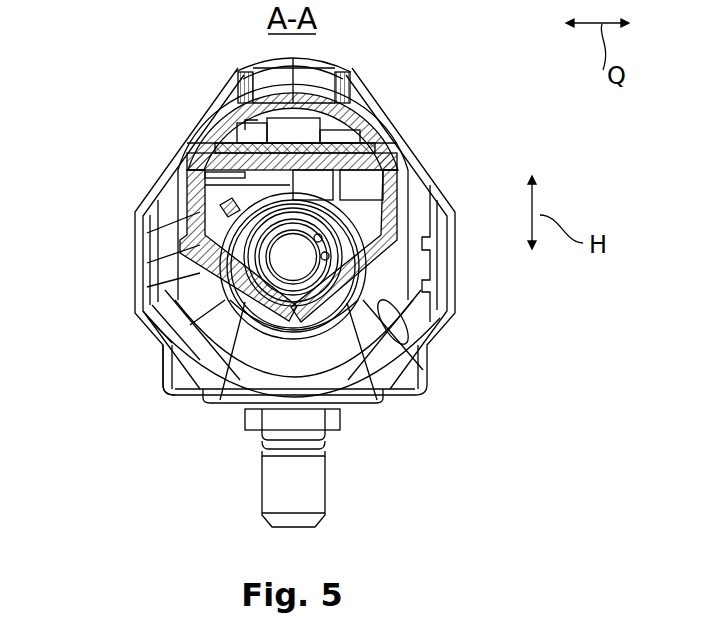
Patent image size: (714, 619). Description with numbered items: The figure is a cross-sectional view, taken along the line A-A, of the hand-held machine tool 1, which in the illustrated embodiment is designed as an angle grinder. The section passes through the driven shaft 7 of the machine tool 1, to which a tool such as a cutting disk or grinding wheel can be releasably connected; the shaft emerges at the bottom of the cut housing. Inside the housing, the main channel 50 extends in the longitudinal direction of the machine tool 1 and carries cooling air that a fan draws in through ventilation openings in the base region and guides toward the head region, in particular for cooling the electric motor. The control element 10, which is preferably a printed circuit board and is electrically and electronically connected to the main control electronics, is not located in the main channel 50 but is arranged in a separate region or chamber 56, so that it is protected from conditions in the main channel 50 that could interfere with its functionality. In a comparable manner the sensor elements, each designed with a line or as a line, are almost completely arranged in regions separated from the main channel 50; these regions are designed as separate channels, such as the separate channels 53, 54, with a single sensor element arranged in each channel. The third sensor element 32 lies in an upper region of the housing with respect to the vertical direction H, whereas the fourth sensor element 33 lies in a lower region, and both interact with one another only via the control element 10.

The hand-held machine tool 1 is at (420, 106).
The driven shaft 7 is at (312, 482).
The control element 10 is at (323, 143).
The third sensor element 32 is at (197, 127).
The fourth sensor element 33 is at (380, 343).
The main channel 50 is at (137, 239).
The separate channel 53 is at (290, 97).
The separate channel 54 is at (173, 330).
The chamber 56 is at (344, 100).